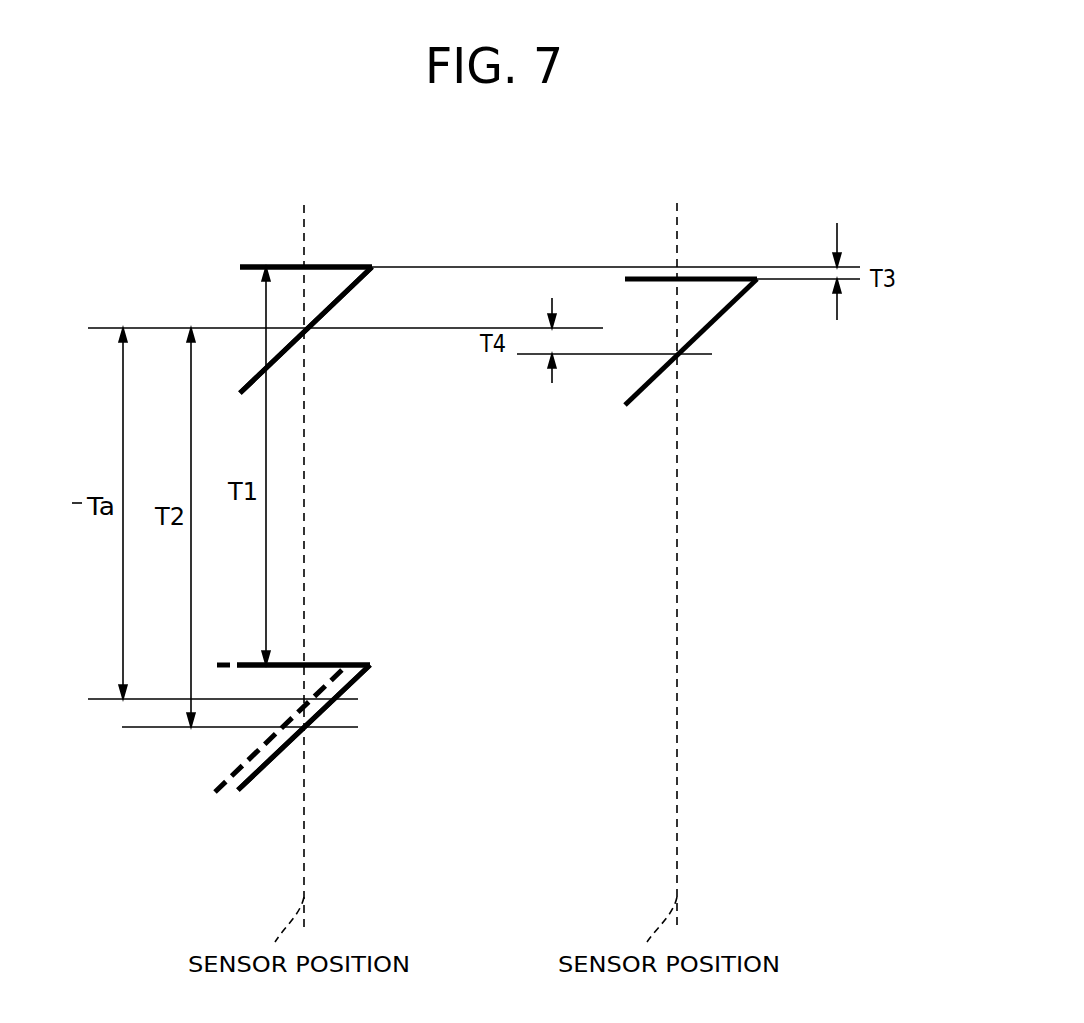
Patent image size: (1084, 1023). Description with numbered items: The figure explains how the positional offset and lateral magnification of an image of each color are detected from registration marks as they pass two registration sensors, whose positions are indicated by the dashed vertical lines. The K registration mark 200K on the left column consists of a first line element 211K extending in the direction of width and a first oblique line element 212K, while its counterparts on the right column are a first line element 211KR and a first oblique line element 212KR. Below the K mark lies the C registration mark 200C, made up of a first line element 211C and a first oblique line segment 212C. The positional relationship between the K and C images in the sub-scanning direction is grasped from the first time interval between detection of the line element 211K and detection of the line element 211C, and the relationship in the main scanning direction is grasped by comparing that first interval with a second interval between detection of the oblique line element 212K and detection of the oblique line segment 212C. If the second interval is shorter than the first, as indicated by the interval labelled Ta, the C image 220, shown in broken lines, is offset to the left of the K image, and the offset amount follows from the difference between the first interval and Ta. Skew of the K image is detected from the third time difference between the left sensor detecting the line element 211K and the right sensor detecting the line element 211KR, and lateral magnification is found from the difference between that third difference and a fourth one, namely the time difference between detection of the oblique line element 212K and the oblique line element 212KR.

The K registration mark 200K is at (259, 250).
The first line element of the K registration mark 211K is at (342, 267).
The first oblique line element of the K registration mark 212K is at (343, 295).
The first line element on the right column 211KR is at (707, 279).
The first oblique line element on the right column 212KR is at (721, 313).
The C registration mark 200C is at (384, 662).
The first line element of the C registration mark 211C is at (340, 665).
The first oblique line segment of the C registration mark 212C is at (328, 707).
The C image 220 is at (228, 793).